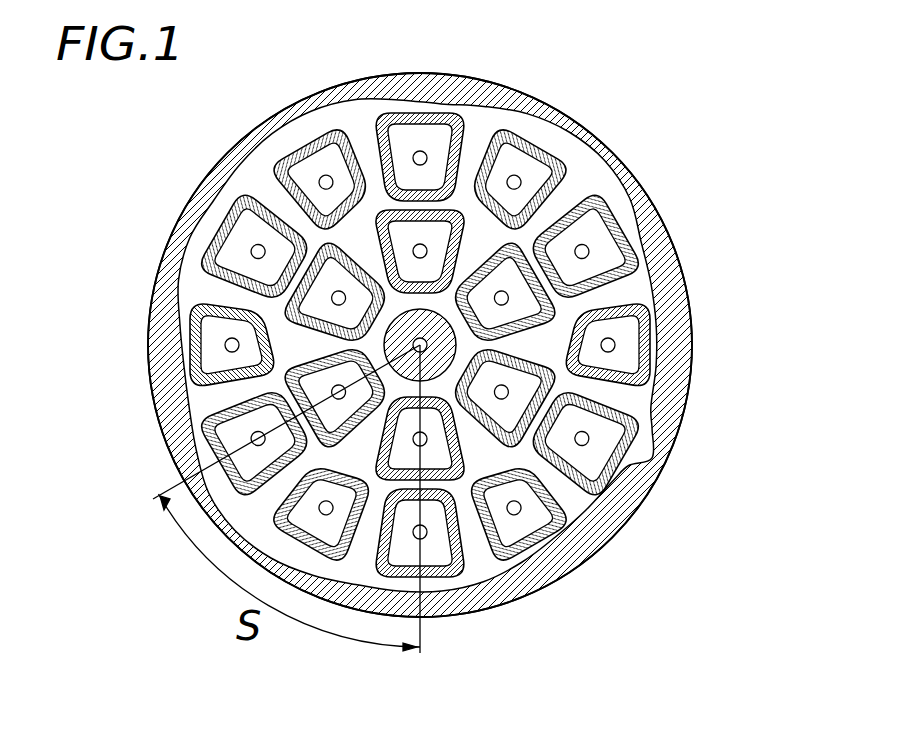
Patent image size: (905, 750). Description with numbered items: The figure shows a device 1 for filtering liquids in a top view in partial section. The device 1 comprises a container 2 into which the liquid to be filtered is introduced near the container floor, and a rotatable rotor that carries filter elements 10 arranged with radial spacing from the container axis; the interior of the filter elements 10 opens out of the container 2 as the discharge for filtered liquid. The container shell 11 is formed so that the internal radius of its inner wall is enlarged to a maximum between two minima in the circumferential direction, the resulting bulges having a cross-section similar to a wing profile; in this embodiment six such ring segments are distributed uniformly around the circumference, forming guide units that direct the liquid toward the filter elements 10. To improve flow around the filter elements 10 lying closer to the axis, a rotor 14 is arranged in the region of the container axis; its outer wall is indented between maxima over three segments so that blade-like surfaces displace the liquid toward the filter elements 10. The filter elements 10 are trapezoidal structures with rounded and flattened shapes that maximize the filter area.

The device for filtering liquids 1 is at (668, 145).
The container 2 is at (613, 516).
The filter elements 10 is at (635, 420).
The container shell 11 is at (543, 555).
The rotor 14 is at (420, 345).